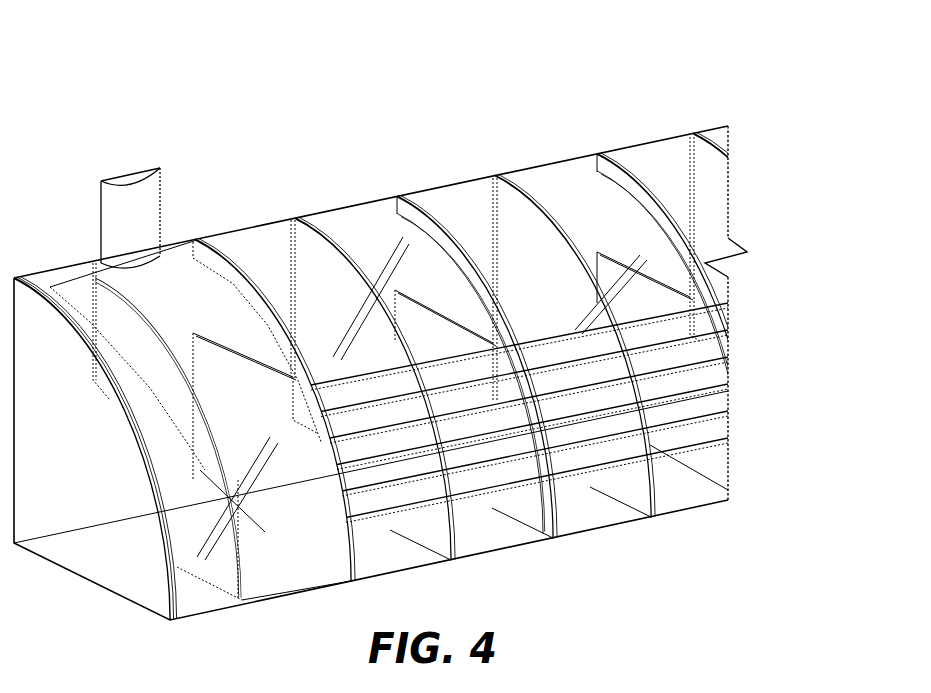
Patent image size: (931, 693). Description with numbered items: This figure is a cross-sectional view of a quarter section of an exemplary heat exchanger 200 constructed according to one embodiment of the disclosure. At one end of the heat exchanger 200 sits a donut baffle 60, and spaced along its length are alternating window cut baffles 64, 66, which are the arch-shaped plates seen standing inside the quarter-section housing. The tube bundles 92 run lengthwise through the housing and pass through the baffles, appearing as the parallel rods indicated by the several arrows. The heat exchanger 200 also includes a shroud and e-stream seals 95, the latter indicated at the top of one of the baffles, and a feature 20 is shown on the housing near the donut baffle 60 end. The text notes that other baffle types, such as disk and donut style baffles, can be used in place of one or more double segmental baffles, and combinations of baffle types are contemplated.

The heat exchanger 200 is at (700, 83).
The inlet port 20 is at (82, 296).
The donut baffle 60 is at (167, 448).
The e-stream seals 95 is at (404, 194).
The arcuate rib 66 is at (514, 228).
The window cut baffles 64 is at (633, 287).
The tube bundles 92 is at (797, 405).